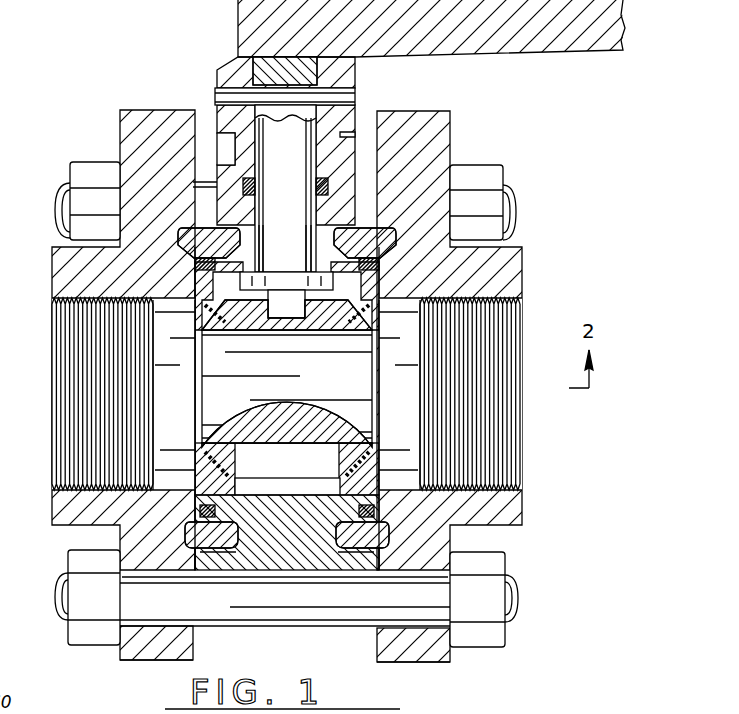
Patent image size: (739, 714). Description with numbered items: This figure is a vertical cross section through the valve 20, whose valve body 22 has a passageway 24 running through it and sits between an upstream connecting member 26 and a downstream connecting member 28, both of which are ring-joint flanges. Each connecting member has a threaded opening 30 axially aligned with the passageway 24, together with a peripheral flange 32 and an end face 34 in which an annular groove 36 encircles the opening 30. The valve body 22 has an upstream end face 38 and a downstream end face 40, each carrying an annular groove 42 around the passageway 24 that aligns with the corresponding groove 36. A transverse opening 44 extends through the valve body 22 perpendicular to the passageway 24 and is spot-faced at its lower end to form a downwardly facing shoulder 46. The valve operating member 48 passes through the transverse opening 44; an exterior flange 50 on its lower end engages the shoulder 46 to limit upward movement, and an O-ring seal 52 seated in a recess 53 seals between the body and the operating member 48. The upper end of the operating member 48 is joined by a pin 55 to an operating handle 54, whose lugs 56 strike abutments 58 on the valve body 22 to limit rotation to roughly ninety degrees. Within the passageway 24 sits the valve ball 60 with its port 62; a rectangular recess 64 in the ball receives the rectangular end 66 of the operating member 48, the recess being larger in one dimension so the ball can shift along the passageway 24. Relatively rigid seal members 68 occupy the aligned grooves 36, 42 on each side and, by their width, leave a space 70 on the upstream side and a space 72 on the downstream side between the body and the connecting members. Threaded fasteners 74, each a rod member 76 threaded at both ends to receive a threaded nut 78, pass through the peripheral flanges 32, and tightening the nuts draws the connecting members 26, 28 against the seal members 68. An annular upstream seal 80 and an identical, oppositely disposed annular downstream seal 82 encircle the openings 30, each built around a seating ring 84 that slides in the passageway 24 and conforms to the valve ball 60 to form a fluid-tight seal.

The valve 20 is at (537, 160).
The valve body 22 is at (278, 567).
The passageway 24 is at (305, 498).
The upstream connecting member 26 is at (62, 505).
The downstream connecting member 28 is at (502, 508).
The threaded opening 30 is at (65, 447).
The peripheral flange 32 is at (122, 660).
The end face 34 is at (195, 645).
The annular groove 36 is at (188, 526).
The upstream end face 38 is at (218, 552).
The downstream end face 40 is at (352, 560).
The annular groove 42 is at (240, 534).
The transverse opening 44 is at (306, 215).
The downwardly facing shoulder 46 is at (263, 258).
The valve operating member 48 is at (294, 156).
The exterior flange 50 is at (276, 262).
The O-ring seal 52 is at (256, 188).
The recess 53 is at (348, 182).
The operating handle 54 is at (438, 42).
The pin 55 is at (352, 100).
The lug 56 is at (216, 134).
The abutment 58 is at (222, 153).
The valve ball 60 is at (294, 472).
The port 62 is at (294, 410).
The rectangular recess 64 is at (276, 332).
The rectangular end 66 is at (292, 320).
The seal member 68 is at (188, 230).
The space 70 is at (202, 558).
The space 72 is at (376, 556).
The threaded fastener 74 is at (505, 612).
The rod member 76 is at (272, 612).
The threaded nut 78 is at (78, 562).
The annular upstream seal 80 is at (200, 290).
The annular downstream seal 82 is at (380, 292).
The seating ring 84 is at (200, 482).